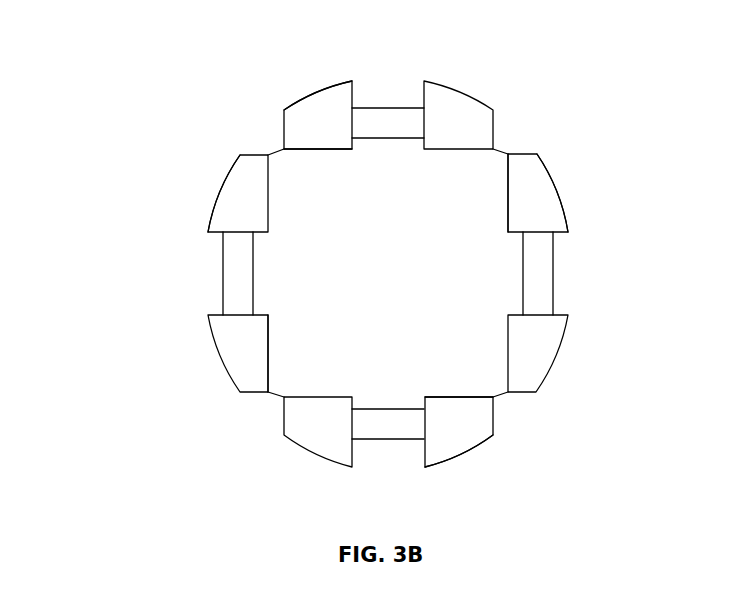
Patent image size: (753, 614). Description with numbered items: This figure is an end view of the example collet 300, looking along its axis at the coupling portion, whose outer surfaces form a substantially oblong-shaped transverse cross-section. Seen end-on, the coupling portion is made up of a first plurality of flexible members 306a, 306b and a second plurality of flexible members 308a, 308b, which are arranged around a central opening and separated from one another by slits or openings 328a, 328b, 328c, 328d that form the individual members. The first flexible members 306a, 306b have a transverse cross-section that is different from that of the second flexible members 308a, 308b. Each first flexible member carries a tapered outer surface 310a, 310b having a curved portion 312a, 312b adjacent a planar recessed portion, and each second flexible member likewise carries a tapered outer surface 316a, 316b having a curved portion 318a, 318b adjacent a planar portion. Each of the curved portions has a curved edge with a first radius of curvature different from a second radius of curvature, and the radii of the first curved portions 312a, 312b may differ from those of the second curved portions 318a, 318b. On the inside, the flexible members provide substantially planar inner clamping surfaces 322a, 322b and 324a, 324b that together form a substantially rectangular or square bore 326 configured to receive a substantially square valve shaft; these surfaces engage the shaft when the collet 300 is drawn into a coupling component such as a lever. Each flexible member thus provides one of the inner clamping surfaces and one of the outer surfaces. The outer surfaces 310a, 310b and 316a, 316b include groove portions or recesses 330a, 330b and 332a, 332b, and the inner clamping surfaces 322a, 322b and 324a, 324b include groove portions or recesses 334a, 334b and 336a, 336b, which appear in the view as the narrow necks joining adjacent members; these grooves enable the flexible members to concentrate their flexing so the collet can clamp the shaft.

The collet 300 is at (160, 42).
The first flexible member 306a is at (193, 193).
The first flexible member 306b is at (536, 190).
The second flexible member 308a is at (282, 116).
The second flexible member 308b is at (467, 434).
The tapered outer surface 310a is at (232, 182).
The tapered outer surface 310b is at (558, 358).
The curved portion 312a is at (241, 351).
The curved portion 312b is at (563, 207).
The tapered outer surface 316a is at (469, 104).
The tapered outer surface 316b is at (458, 437).
The curved portion 318a is at (331, 80).
The curved portion 318b is at (307, 456).
The inner clamping surface 322a is at (270, 339).
The inner clamping surface 322b is at (507, 194).
The inner clamping surface 324a is at (317, 151).
The inner clamping surface 324b is at (459, 396).
The bore 326 is at (388, 273).
The slit or opening 328a is at (279, 151).
The slit or opening 328b is at (498, 151).
The slit or opening 328c is at (501, 396).
The slit or opening 328d is at (282, 397).
The groove portion or recess 330a is at (237, 273).
The groove portion or recess 330b is at (539, 273).
The groove portion or recess 332a is at (391, 115).
The groove portion or recess 332b is at (389, 427).
The groove portion or recess 334a is at (253, 273).
The groove portion or recess 334b is at (523, 277).
The groove portion or recess 336a is at (389, 140).
The groove portion or recess 336b is at (398, 408).